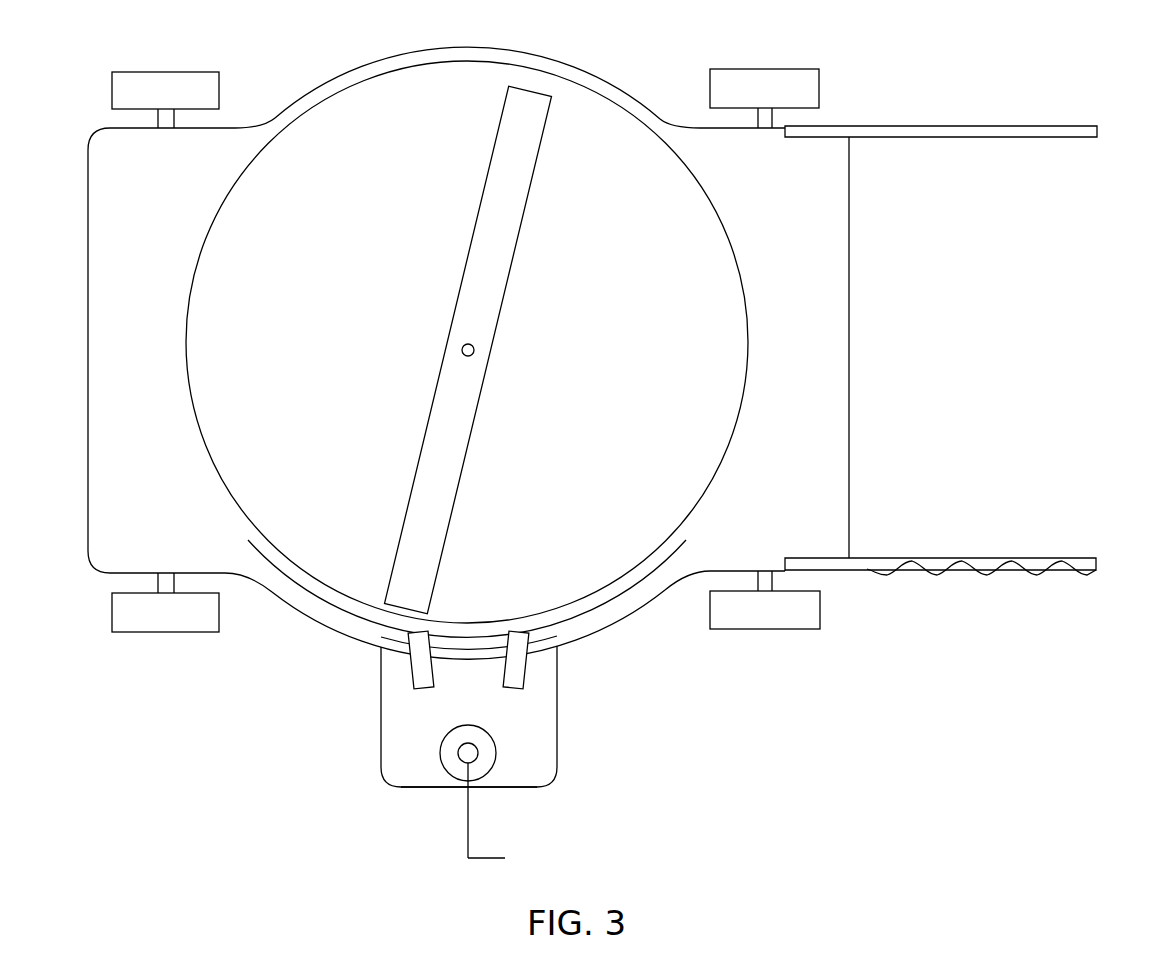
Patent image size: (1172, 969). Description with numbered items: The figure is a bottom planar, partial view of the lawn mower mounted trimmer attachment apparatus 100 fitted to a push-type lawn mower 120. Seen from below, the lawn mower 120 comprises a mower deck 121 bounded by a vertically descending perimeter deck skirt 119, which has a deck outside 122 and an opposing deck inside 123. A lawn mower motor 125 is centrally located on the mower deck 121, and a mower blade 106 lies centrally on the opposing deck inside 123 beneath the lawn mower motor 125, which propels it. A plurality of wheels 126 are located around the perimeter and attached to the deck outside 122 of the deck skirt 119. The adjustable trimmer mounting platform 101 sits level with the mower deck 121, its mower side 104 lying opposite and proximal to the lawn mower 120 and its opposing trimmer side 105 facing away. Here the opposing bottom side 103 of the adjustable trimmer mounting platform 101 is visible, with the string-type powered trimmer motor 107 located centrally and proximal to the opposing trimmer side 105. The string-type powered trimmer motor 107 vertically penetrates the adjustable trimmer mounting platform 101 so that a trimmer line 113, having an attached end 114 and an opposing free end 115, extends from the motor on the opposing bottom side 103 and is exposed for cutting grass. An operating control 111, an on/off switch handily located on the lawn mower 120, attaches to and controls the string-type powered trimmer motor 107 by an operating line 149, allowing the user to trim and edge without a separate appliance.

The lawn mower mounted trimmer attachment apparatus 100 is at (607, 695).
The adjustable trimmer mounting platform 101 is at (557, 753).
The opposing bottom side 103 is at (490, 712).
The mower side 104 is at (465, 663).
The opposing trimmer side 105 is at (432, 788).
The mower blade 106 is at (520, 245).
The string-type powered trimmer motor 107 is at (456, 759).
The operating control 111 is at (377, 647).
The trimmer line 113 is at (468, 836).
The attached end 114 is at (468, 763).
The opposing free end 115 is at (513, 860).
The vertically descending perimeter deck skirt 119 is at (620, 605).
The lawn mower 120 is at (807, 199).
The mower deck 121 is at (294, 309).
The deck outside 122 is at (338, 630).
The opposing deck inside 123 is at (307, 117).
The lawn mower motor 125 is at (474, 352).
The wheels 126 is at (170, 72).
The operating line 149 is at (1030, 572).